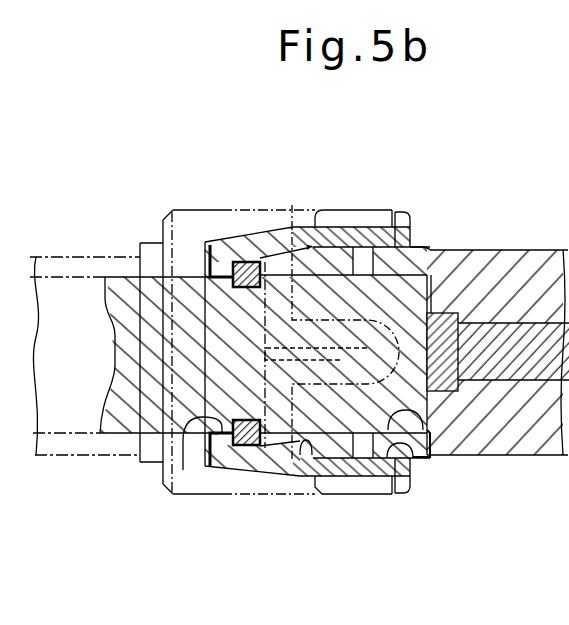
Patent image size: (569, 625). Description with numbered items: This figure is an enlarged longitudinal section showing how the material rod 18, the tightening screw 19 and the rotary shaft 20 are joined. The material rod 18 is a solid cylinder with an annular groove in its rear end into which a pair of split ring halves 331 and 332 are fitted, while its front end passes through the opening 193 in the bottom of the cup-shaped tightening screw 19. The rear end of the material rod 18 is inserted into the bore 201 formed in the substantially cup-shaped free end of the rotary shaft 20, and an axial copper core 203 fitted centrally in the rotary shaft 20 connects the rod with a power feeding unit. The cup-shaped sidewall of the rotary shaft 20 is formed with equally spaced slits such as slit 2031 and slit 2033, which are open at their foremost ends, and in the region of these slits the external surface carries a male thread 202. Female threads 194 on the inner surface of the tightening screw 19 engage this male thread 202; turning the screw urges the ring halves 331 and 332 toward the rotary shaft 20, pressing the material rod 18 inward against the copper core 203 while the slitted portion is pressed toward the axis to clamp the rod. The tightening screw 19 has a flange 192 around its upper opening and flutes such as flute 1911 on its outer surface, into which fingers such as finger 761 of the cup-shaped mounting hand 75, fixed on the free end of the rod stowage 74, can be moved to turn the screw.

The rod stowage 74 is at (62, 257).
The material rod 18 is at (122, 293).
The mounting hand 75 is at (190, 208).
The tightening screw 19 is at (262, 240).
The split ring half 331 is at (243, 260).
The split ring half 332 is at (250, 447).
The slit 2031 is at (305, 263).
The slit 2033 is at (303, 454).
The finger 761 is at (351, 208).
The flute 1911 is at (370, 220).
The flange 192 is at (413, 218).
The male thread 202 is at (420, 240).
The rotary shaft 20 is at (553, 250).
The copper core 203 is at (453, 392).
The opening 193 is at (183, 470).
The female threads 194 is at (425, 462).
The bore 201 is at (430, 452).